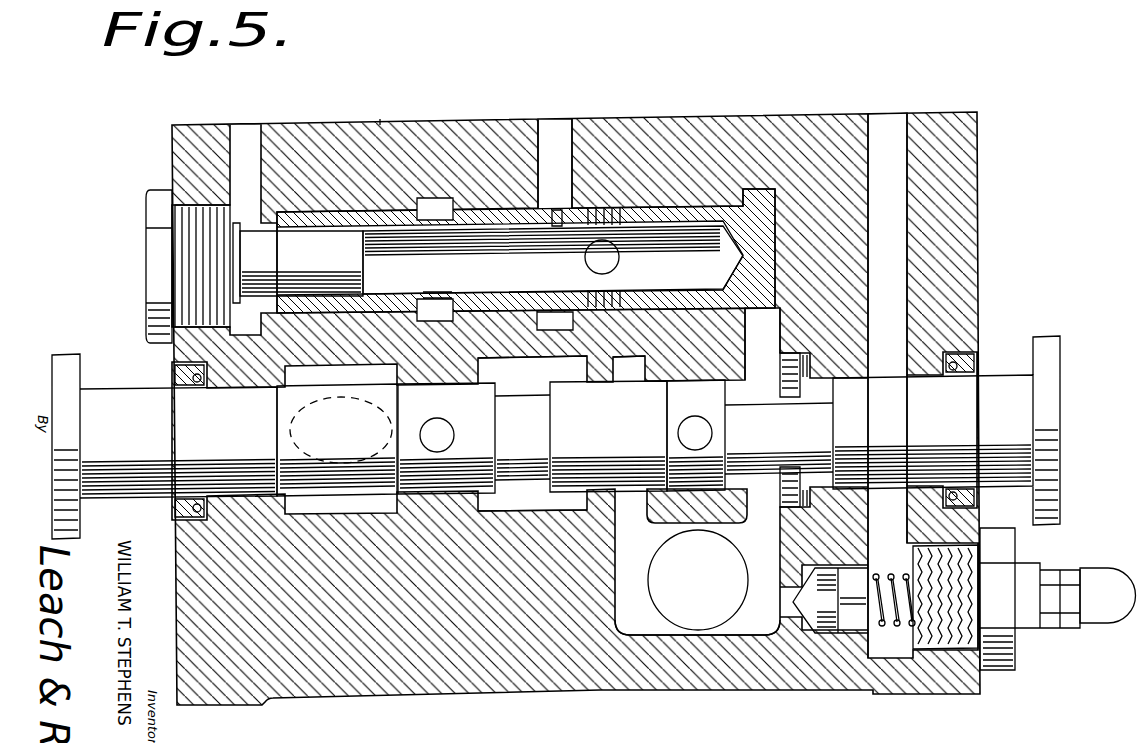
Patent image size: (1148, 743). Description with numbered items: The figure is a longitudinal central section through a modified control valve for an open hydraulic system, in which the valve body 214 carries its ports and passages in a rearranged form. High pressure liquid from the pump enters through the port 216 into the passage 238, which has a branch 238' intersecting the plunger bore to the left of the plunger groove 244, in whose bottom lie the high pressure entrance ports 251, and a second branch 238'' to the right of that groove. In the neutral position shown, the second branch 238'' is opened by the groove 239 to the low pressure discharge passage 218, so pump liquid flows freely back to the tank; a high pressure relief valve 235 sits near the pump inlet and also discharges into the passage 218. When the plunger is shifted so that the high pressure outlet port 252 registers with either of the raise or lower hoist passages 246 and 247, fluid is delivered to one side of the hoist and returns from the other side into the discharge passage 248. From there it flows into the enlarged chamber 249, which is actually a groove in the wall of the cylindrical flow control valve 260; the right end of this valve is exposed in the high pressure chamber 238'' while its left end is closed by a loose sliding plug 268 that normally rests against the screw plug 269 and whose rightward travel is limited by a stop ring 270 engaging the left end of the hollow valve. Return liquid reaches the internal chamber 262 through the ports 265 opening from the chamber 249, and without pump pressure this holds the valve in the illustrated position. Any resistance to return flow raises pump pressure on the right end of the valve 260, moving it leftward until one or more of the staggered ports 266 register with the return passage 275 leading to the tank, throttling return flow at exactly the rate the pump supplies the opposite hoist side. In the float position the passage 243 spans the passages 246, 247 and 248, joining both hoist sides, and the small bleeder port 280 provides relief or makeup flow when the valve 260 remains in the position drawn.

The valve body 214 is at (977, 187).
The port 216 is at (675, 610).
The low pressure discharge passage 218 is at (890, 252).
The high pressure relief valve 235 is at (840, 612).
The passage 238 is at (697, 590).
The branch 238' is at (610, 386).
The second branch 238'' is at (776, 370).
The groove 239 is at (808, 438).
The passage 243 is at (300, 492).
The plunger groove 244 is at (672, 400).
The hoist passage 246 is at (532, 433).
The hoist passage 247 is at (337, 433).
The discharge passage 248 is at (446, 438).
The enlarged chamber 249 is at (463, 205).
The high pressure entrance ports 251 is at (678, 438).
The high pressure outlet port 252 is at (452, 440).
The flow control valve 260 is at (690, 272).
The chamber 262 is at (526, 259).
The ports 265 is at (455, 296).
The staggered ports 266 is at (620, 250).
The loose sliding plug 268 is at (301, 263).
The screw plug 269 is at (160, 262).
The stop ring 270 is at (247, 240).
The return passage 275 is at (556, 150).
The bleeder port 280 is at (555, 228).